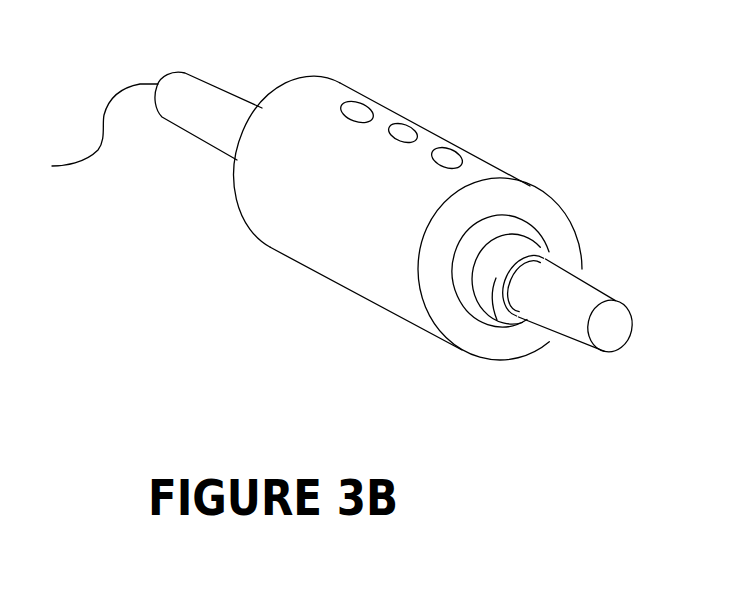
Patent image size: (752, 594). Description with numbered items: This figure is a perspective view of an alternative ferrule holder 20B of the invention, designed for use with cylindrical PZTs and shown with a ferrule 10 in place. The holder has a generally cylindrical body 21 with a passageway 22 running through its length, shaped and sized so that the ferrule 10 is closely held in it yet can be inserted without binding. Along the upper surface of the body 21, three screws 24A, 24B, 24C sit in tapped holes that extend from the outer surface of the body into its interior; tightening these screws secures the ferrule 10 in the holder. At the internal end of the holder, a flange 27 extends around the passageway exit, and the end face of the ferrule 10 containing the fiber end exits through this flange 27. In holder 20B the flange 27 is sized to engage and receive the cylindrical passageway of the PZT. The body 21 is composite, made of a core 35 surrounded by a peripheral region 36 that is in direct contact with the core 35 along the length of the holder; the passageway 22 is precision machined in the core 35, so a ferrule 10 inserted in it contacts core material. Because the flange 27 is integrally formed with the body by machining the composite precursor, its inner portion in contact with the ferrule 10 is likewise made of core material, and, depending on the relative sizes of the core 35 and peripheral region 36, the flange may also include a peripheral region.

The ferrule holder 20B is at (158, 373).
The body 21 is at (280, 187).
The screw 24A is at (358, 110).
The screw 24B is at (403, 132).
The screw 24C is at (450, 158).
The passageway 22 is at (565, 258).
The ferrule 10 is at (580, 290).
The core 35 is at (463, 282).
The peripheral region 36 is at (477, 337).
The flange 27 is at (498, 276).